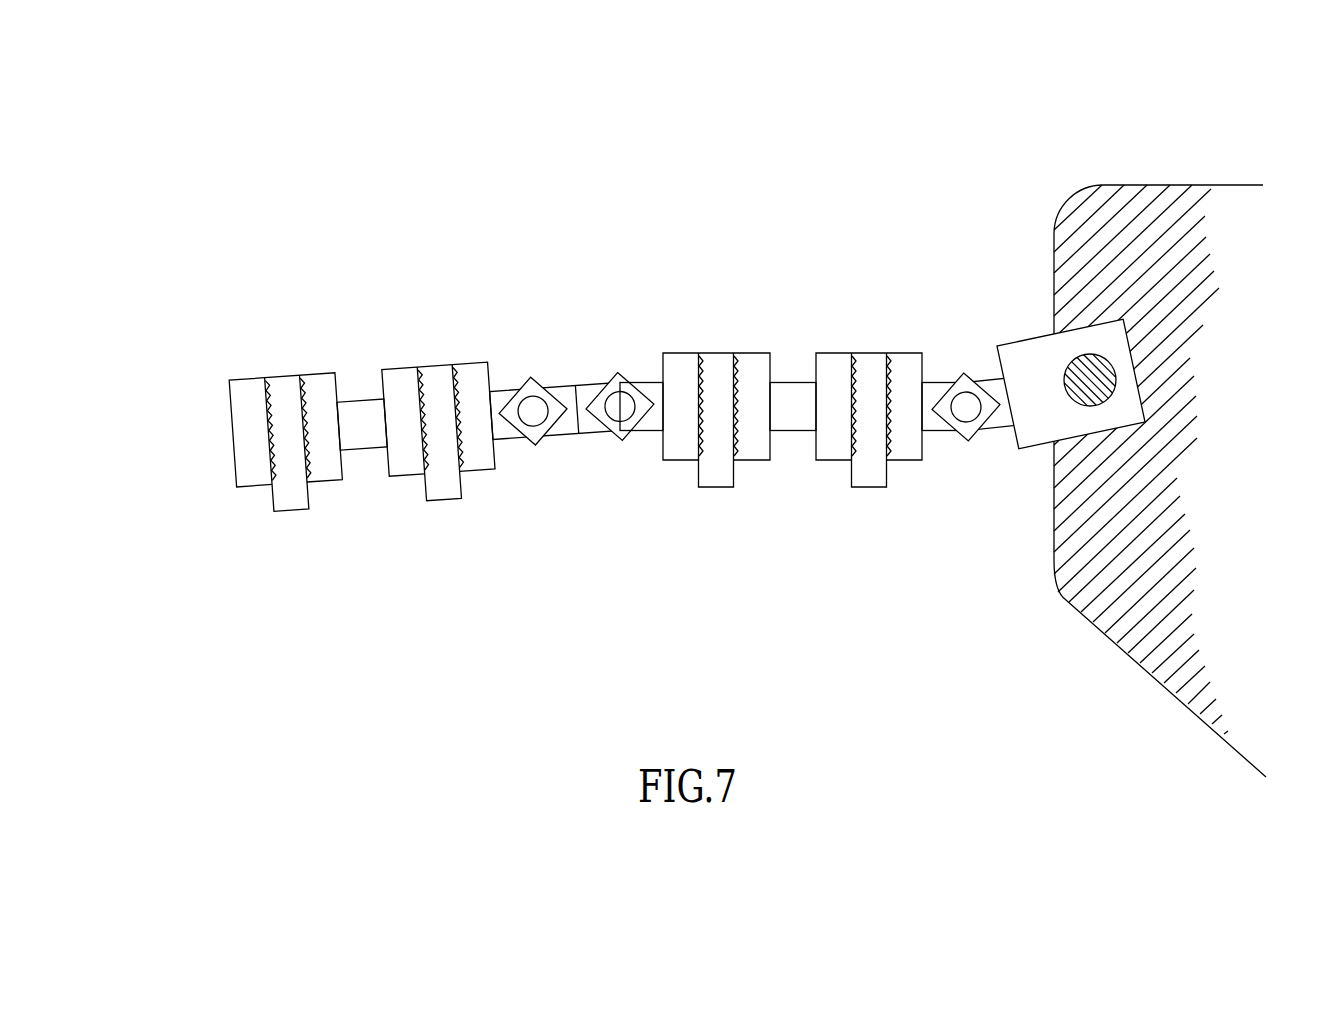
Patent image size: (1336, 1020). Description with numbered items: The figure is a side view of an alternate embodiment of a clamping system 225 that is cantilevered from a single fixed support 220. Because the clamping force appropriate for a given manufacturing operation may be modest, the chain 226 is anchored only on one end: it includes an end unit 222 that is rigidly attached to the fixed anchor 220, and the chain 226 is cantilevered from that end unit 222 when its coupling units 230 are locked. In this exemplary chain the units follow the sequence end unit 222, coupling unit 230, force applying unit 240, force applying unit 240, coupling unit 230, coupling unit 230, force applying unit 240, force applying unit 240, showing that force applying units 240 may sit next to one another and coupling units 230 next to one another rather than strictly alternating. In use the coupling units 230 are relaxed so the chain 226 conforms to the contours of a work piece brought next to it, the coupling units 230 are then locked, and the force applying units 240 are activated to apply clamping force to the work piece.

The fixed support 220 is at (1177, 185).
The end unit 222 is at (1025, 330).
The clamping system 225 is at (470, 132).
The chain 226 is at (233, 348).
The coupling unit 230 is at (617, 358).
The force applying unit 240 is at (522, 387).